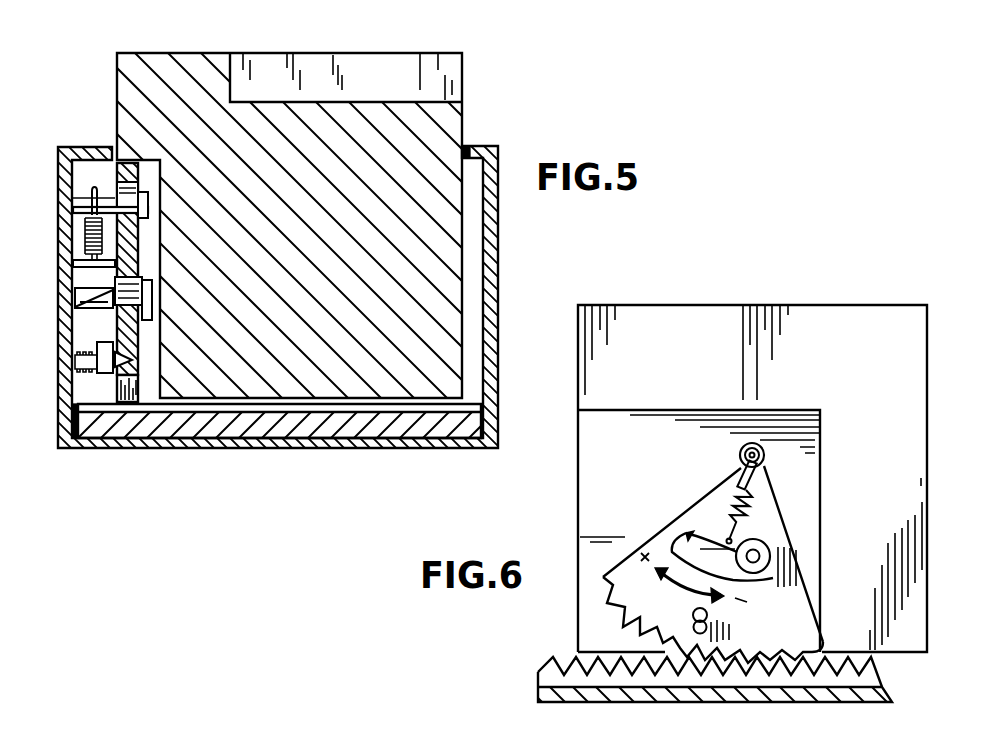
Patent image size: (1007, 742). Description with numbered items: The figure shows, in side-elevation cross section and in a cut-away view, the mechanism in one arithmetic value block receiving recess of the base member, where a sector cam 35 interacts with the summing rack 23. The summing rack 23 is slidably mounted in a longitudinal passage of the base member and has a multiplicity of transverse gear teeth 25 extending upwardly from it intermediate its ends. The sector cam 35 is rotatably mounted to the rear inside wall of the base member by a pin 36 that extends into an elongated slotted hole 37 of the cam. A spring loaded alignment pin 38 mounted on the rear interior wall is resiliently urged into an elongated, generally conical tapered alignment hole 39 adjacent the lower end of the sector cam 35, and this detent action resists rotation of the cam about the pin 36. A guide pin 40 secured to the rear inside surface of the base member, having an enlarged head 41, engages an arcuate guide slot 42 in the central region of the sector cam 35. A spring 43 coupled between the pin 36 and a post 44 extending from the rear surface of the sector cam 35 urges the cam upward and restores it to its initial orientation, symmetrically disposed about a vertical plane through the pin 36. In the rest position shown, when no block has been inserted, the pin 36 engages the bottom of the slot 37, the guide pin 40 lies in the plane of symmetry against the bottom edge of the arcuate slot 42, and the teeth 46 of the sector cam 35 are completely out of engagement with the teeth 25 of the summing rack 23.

In FIG. 5, the summing rack 23 is at (372, 440).
In FIG. 6, the summing rack 23 is at (886, 690).
In FIG. 5, the transverse gear teeth 25 is at (308, 408).
In FIG. 6, the transverse gear teeth 25 is at (540, 672).
In FIG. 5, the sector cam 35 is at (138, 245).
In FIG. 6, the sector cam 35 is at (770, 502).
In FIG. 5, the pin 36 is at (150, 200).
In FIG. 6, the pin 36 is at (766, 440).
In FIG. 5, the elongated slotted hole 37 is at (112, 177).
In FIG. 6, the elongated slotted hole 37 is at (740, 482).
In FIG. 5, the spring loaded alignment pin 38 is at (100, 378).
In FIG. 6, the spring loaded alignment pin 38 is at (712, 626).
In FIG. 5, the tapered alignment hole 39 is at (130, 358).
In FIG. 5, the guide pin 40 is at (143, 299).
In FIG. 6, the guide pin 40 is at (762, 556).
In FIG. 5, the enlarged head 41 is at (143, 285).
In FIG. 6, the enlarged head 41 is at (775, 548).
In FIG. 5, the arcuate guide slot 42 is at (77, 297).
In FIG. 6, the arcuate guide slot 42 is at (773, 577).
In FIG. 5, the spring 43 is at (93, 220).
In FIG. 6, the spring 43 is at (733, 505).
In FIG. 5, the post 44 is at (93, 260).
In FIG. 5, the teeth 46 is at (138, 386).
In FIG. 6, the teeth 46 is at (628, 622).